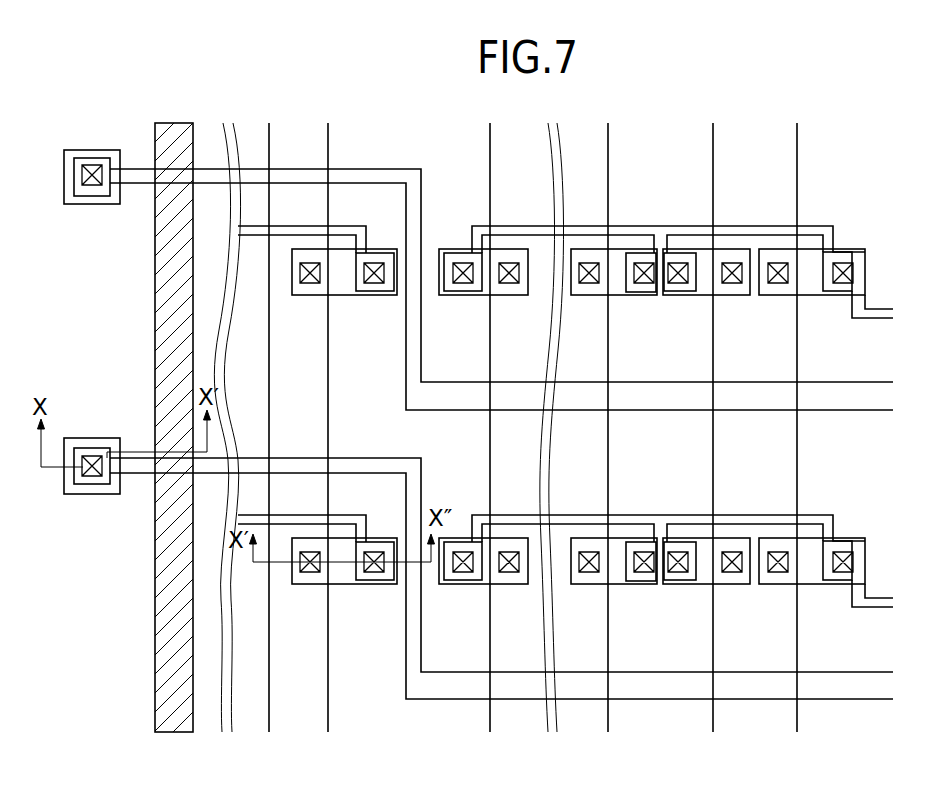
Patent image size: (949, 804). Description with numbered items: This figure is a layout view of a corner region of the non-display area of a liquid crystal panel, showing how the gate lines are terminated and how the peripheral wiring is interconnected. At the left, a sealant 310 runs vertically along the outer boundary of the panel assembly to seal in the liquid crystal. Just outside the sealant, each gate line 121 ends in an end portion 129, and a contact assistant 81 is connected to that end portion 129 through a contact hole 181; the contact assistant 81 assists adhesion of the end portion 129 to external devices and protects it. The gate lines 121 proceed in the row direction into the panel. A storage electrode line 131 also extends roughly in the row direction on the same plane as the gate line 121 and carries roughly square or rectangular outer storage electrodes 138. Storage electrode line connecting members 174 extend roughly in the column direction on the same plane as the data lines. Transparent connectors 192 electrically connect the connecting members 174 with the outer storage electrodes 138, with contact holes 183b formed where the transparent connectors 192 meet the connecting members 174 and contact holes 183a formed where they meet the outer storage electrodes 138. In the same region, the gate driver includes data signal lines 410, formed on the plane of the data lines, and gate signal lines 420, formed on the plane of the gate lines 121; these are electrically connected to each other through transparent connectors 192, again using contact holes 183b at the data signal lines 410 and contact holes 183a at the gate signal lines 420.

The contact assistant 81 is at (78, 150).
The end portion of the gate line 129 is at (98, 158).
The contact hole 181 is at (91, 187).
The sealant 310 is at (155, 308).
The data signal line 410 is at (269, 698).
The storage electrode line connecting member 174 is at (713, 440).
The gate line 121 is at (358, 472).
The gate signal line 420 is at (346, 516).
The storage electrode line 131 is at (512, 524).
The transparent connector 192 is at (345, 590).
The outer storage electrode 138 is at (644, 580).
The contact hole 183a is at (376, 553).
The contact hole 183b is at (310, 553).